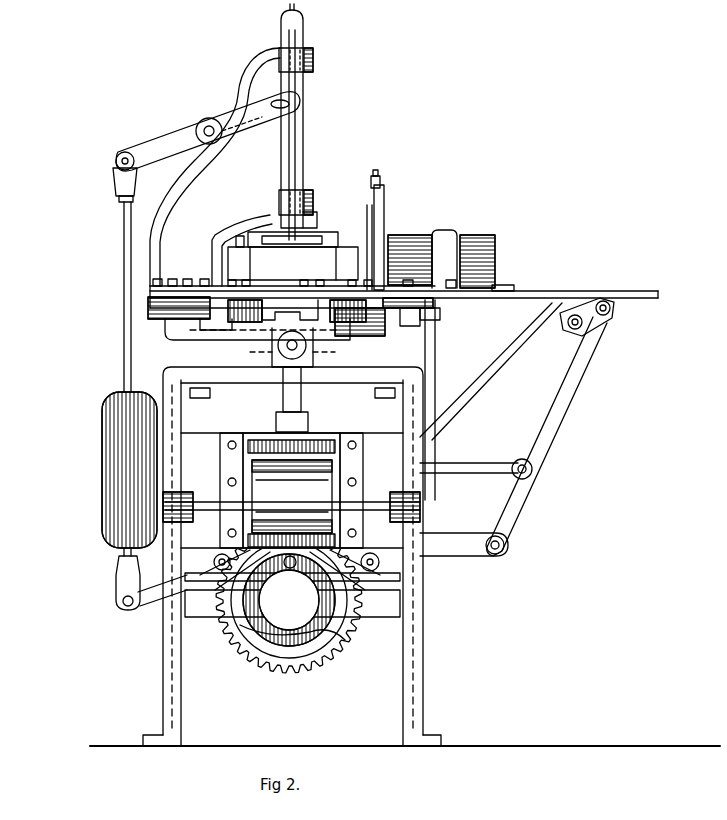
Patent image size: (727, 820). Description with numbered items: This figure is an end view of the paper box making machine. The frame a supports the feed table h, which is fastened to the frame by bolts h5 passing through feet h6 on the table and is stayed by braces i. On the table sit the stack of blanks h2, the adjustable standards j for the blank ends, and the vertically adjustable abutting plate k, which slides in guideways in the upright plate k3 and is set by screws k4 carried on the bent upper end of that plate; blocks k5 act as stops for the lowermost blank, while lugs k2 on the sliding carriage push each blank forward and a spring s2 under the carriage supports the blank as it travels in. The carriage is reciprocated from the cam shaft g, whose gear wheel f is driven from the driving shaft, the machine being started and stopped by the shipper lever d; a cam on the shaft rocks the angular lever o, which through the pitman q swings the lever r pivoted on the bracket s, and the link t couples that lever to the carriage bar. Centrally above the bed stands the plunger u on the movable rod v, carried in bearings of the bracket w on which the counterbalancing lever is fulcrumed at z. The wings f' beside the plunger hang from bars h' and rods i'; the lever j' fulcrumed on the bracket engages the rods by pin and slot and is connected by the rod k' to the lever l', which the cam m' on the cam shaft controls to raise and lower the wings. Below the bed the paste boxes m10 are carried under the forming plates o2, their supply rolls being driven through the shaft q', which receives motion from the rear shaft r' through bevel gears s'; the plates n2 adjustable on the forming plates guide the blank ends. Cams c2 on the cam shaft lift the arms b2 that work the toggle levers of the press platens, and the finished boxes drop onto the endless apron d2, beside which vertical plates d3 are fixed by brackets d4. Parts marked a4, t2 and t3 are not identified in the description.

The frame a is at (188, 402).
The feed table h is at (404, 284).
The rods i' is at (305, 125).
The vertically movable rod v is at (299, 26).
The bracket w is at (215, 167).
The fulcrum z is at (209, 120).
The lever j' is at (235, 161).
The rod k' is at (108, 362).
The lever l' is at (144, 521).
The bars h' is at (277, 243).
The plunger u is at (293, 263).
The wings f' is at (291, 238).
The abutting plate k is at (369, 247).
The upright plate k3 is at (386, 226).
The screws k4 is at (371, 192).
The guards or standards j is at (462, 242).
The stack of blanks h2 is at (484, 248).
The blocks k5 is at (507, 287).
The plates or lugs k2 is at (518, 290).
The link t2 is at (382, 284).
The shaft r' is at (244, 318).
The gage or forming plates o2 is at (222, 300).
The shaft q' is at (287, 312).
The paste boxes m10 is at (215, 322).
The bevel gears s' is at (276, 347).
The bracket d4 is at (340, 350).
The frame part a4 is at (223, 385).
The vertical plate d3 is at (343, 402).
The lever or arm b2 is at (292, 410).
The endless apron d2 is at (292, 490).
The plates n2 is at (320, 570).
The angular lever o is at (422, 580).
The cam m' is at (324, 600).
The cams c2 is at (320, 660).
The cam shaft g is at (256, 632).
The gear wheel f is at (270, 678).
The shipper lever d is at (433, 384).
The braces i is at (491, 371).
The bolts h5 is at (428, 320).
The feet h6 is at (478, 313).
The spring s2 is at (507, 327).
The link t is at (600, 328).
The pivot t3 is at (612, 311).
The lever r is at (547, 436).
The pitman q is at (476, 454).
The bracket s is at (464, 544).